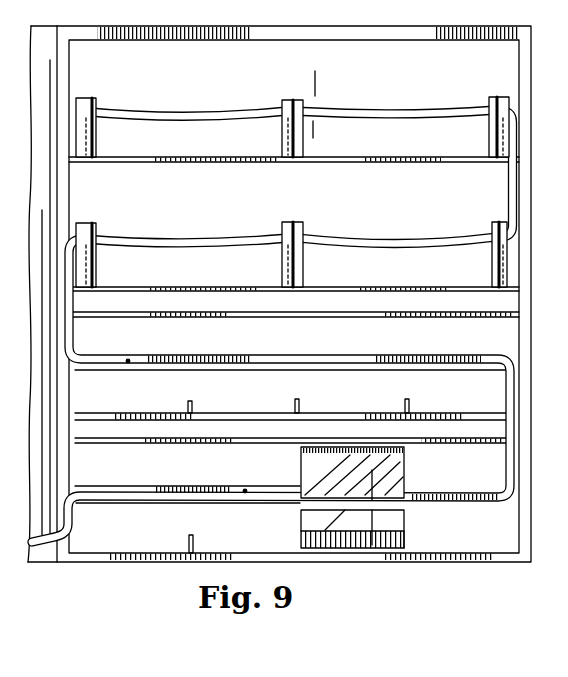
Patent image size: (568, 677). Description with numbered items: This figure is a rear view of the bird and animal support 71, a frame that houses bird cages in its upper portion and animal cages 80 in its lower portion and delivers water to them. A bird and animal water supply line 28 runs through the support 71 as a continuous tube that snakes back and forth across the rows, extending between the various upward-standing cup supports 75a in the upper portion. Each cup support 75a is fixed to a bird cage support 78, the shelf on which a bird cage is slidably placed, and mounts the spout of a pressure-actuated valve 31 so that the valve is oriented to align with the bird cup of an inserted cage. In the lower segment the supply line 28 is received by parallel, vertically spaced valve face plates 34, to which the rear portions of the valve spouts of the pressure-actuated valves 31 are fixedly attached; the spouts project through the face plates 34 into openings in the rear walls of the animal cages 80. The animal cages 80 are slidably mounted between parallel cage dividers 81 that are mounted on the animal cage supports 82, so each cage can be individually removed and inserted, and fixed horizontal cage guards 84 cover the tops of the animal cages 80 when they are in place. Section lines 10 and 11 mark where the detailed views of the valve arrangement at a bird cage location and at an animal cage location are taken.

The section line 10- 10 is at (300, 80).
The section line 11- 11 is at (360, 487).
The bird and animal water supply line 28 is at (178, 112).
The pressure-actuated valve 31 is at (88, 91).
The valve face plate 34 is at (118, 464).
The bird and animal support 71 is at (110, 572).
The cup support 75a is at (88, 131).
The bird cage support 78 is at (210, 163).
The animal cage 80 is at (400, 478).
The cage divider 81 is at (189, 402).
The animal cage support 82 is at (258, 413).
The cage guard 84 is at (439, 312).